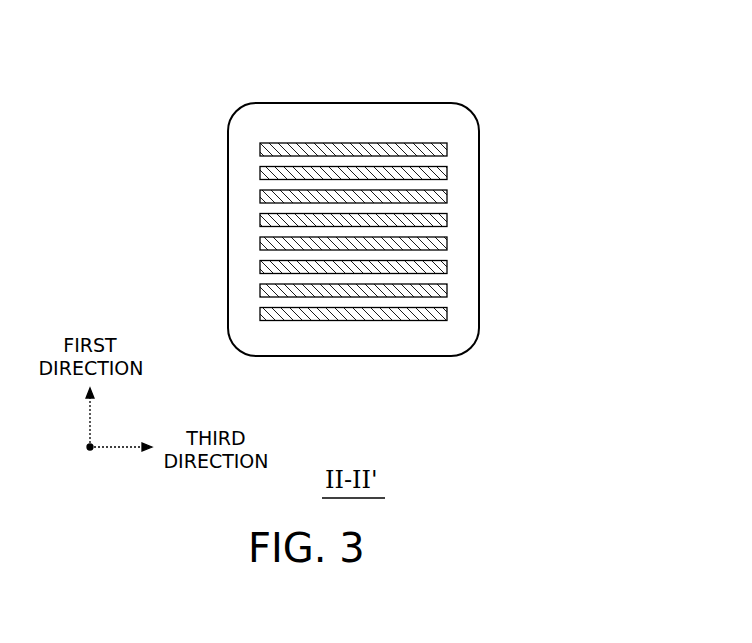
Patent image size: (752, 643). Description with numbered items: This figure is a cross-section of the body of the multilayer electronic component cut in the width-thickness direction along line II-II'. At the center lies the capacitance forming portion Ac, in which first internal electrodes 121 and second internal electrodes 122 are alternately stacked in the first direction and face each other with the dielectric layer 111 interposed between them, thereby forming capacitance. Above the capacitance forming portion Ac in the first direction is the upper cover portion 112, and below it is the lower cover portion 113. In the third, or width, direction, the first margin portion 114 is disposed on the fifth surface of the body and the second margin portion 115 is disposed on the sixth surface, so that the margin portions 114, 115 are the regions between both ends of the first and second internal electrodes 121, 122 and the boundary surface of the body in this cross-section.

The dielectric layer 111 is at (440, 162).
The upper cover portion 112 is at (348, 116).
The lower cover portion 113 is at (350, 342).
The first margin portion 114 is at (240, 262).
The second margin portion 115 is at (470, 262).
The first internal electrode 121 is at (434, 144).
The second internal electrode 122 is at (448, 172).
The capacitance forming portion Ac is at (258, 233).